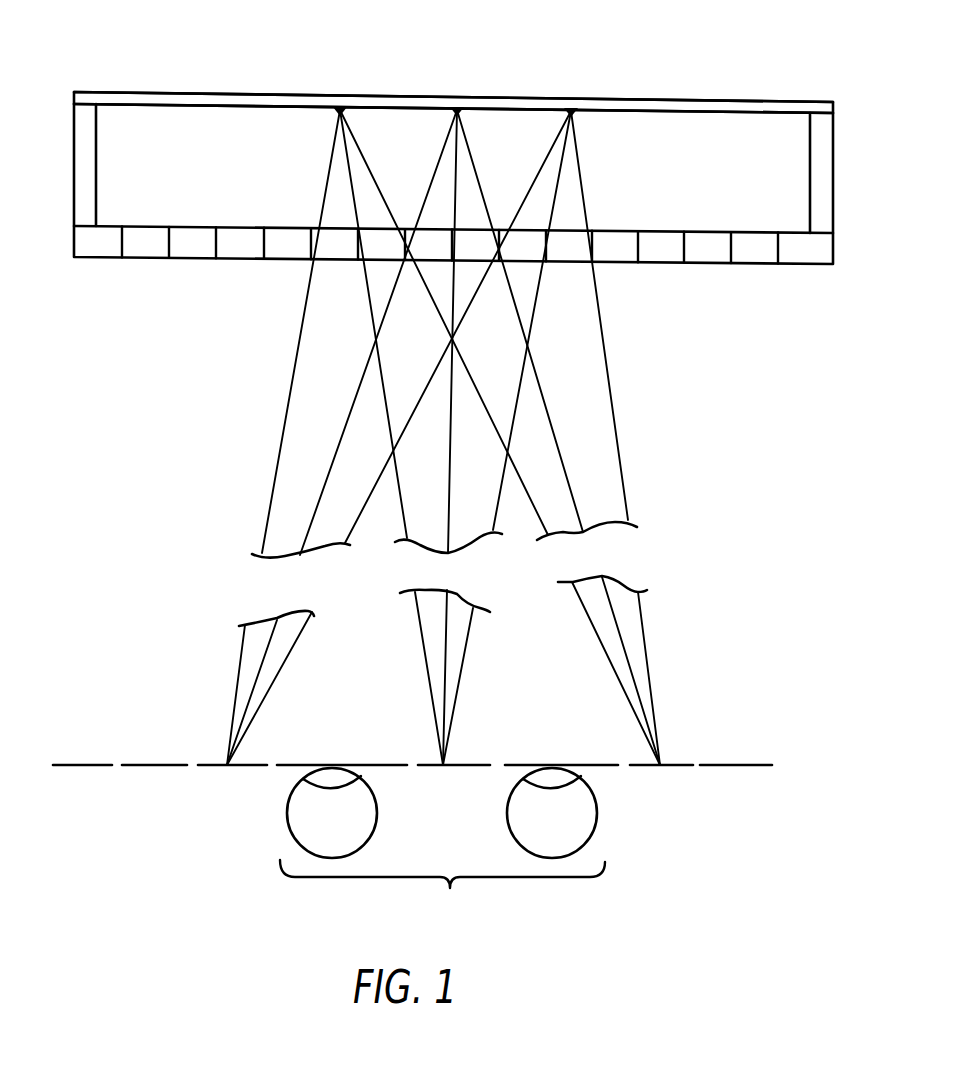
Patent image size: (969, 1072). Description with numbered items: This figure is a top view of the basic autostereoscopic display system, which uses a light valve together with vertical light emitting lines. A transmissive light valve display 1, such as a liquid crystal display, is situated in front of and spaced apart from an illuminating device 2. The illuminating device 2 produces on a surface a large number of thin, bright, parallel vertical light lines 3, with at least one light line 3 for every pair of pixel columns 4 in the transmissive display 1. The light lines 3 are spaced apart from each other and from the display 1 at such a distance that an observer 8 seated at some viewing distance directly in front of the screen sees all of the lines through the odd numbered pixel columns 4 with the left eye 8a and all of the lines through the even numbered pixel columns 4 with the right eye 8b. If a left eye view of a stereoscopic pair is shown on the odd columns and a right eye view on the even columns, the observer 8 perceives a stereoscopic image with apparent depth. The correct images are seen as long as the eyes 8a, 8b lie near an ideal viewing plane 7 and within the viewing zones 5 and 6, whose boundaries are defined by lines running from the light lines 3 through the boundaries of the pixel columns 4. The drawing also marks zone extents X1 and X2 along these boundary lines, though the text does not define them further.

The transmissive light valve display 1 is at (280, 266).
The illuminating device 2 is at (541, 92).
The light lines 3 is at (454, 90).
The pixel columns 4 is at (525, 252).
The viewing zone 5 is at (270, 688).
The viewing zone 6 is at (609, 670).
The ideal viewing plane 7 is at (718, 770).
The observer 8 is at (442, 894).
The left eye 8a is at (378, 810).
The right eye 8b is at (597, 812).
The viewing zone width X1 is at (413, 643).
The viewing zone width X2 is at (468, 672).